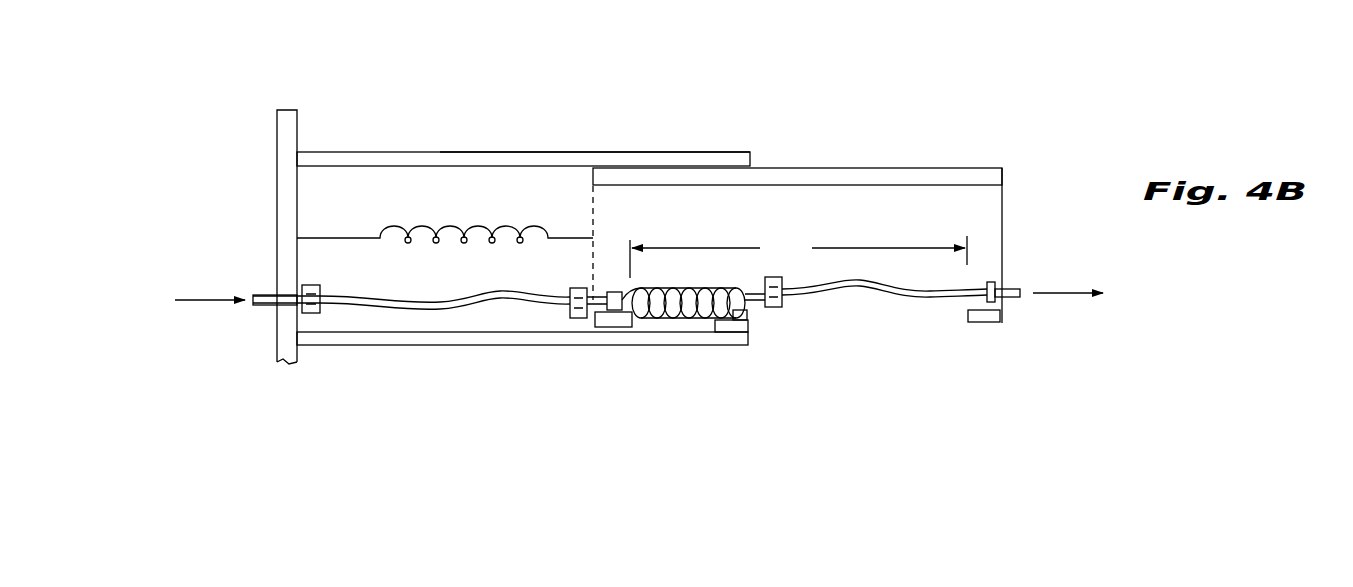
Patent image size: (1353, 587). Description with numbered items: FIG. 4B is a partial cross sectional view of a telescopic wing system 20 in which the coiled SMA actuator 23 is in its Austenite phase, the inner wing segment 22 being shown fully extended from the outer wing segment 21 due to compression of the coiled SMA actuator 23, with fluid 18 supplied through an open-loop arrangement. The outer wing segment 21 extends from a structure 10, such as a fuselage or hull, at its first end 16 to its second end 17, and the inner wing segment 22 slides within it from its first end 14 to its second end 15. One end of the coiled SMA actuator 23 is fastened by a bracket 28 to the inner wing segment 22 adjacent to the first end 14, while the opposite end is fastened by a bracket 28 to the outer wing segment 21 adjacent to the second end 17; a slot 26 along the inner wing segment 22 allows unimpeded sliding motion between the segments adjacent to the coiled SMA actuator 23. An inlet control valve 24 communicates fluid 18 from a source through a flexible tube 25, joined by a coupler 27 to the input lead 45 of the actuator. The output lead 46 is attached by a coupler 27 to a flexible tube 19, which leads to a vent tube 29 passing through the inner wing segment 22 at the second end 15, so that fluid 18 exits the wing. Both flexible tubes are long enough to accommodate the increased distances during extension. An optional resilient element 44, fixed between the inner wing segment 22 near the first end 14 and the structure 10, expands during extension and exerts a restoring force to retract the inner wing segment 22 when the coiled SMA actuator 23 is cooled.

The structure 10 is at (290, 110).
The first end 16 is at (297, 152).
The telescopic wing system 20 is at (445, 145).
The outer wing segment 21 is at (610, 150).
The second end 17 is at (738, 150).
The first end 14 is at (590, 170).
The inner wing segment 22 is at (878, 168).
The second end 15 is at (990, 168).
The resilient element 44 is at (318, 240).
The flexible tube 25 is at (426, 345).
The inlet control valve 24 is at (265, 295).
The fluid 18 is at (208, 305).
The flexible tube 19 is at (898, 296).
The vent tube 29 is at (1008, 289).
The coupler 27 is at (315, 318).
The bracket 28 is at (615, 328).
The input lead 45 is at (628, 322).
The coiled SMA actuator 23 is at (716, 320).
The output lead 46 is at (765, 312).
The slot 26 is at (798, 256).